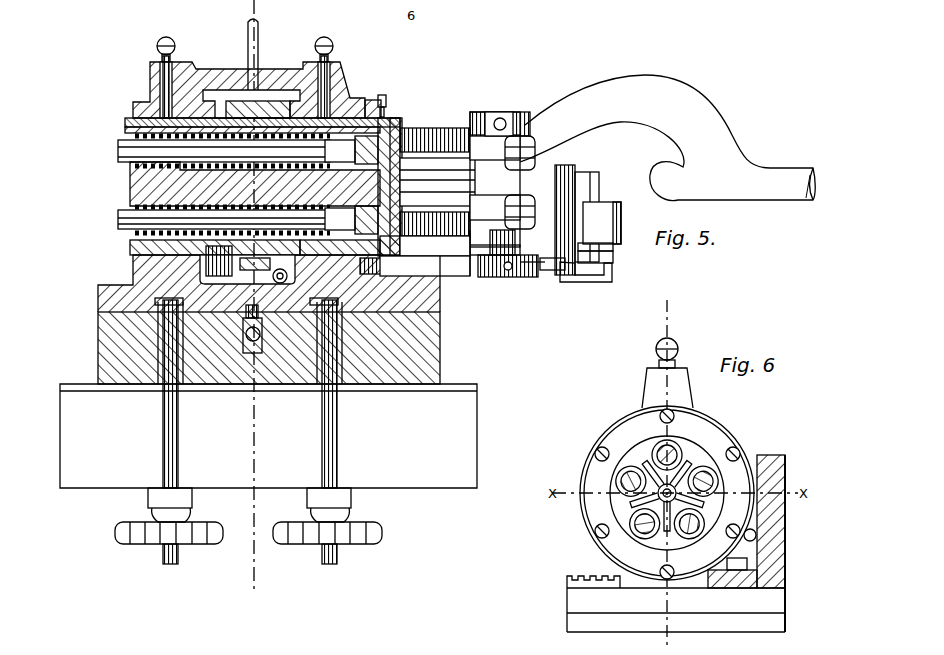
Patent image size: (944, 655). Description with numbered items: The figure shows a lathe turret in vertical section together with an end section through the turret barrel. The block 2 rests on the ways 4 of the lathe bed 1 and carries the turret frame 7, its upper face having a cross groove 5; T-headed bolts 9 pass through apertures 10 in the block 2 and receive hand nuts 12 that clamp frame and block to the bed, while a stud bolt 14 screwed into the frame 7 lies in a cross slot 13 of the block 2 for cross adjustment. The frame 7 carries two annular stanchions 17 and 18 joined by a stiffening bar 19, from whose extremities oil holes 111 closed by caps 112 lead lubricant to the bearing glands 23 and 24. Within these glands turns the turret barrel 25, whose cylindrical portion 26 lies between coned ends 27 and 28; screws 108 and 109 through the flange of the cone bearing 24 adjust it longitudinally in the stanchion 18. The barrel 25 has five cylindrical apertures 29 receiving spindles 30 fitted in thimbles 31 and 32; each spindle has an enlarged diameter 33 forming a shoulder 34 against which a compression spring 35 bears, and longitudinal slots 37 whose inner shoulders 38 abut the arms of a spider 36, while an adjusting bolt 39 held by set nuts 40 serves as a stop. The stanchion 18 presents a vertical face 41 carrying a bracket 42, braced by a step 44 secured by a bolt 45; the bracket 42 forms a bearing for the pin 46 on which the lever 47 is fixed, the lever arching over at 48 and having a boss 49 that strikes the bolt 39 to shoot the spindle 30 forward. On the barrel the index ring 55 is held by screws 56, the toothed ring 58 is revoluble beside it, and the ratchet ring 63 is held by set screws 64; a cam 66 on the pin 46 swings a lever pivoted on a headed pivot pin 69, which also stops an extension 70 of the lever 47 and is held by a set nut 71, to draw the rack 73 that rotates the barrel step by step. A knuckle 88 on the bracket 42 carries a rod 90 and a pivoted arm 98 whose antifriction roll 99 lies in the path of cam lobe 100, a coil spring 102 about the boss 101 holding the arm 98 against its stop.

In FIG. 5, the lathe bed 1 is at (268, 436).
In FIG. 5, the block 2 is at (440, 344).
In FIG. 6, the block 2 is at (567, 626).
In FIG. 5, the ways of the lathe bed 4 is at (470, 382).
In FIG. 6, the cross groove 5 is at (674, 472).
In FIG. 5, the turret frame 7 is at (98, 292).
In FIG. 6, the turret frame 7 is at (567, 598).
In FIG. 5, the T-headed bolts 9 is at (178, 424).
In FIG. 5, the apertures 10 is at (160, 370).
In FIG. 5, the hand nuts 12 is at (115, 530).
In FIG. 5, the cross slot 13 is at (258, 353).
In FIG. 5, the stud bolt 14 is at (234, 396).
In FIG. 5, the annular stanchion 17 is at (133, 105).
In FIG. 6, the annular stanchion 17 is at (667, 384).
In FIG. 5, the annular stanchion 18 is at (366, 100).
In FIG. 6, the annular stanchion 18 is at (728, 432).
In FIG. 5, the stiffening bar 19 is at (276, 68).
In FIG. 5, the bearing gland 23 is at (125, 122).
In FIG. 5, the bearing gland 24 is at (392, 140).
In FIG. 6, the bearing gland 24 is at (668, 436).
In FIG. 5, the turret barrel 25 is at (130, 183).
In FIG. 6, the turret barrel 25 is at (687, 525).
In FIG. 5, the cylindrical portion 26 is at (217, 90).
In FIG. 5, the coned end 27 is at (125, 131).
In FIG. 5, the coned end 28 is at (410, 125).
In FIG. 5, the cylindrical apertures 29 is at (132, 198).
In FIG. 5, the spindles 30 is at (118, 150).
In FIG. 5, the thimble 31 is at (130, 166).
In FIG. 5, the thimble 32 is at (397, 244).
In FIG. 6, the thimble 32 is at (652, 452).
In FIG. 5, the enlarged diameter 33 is at (340, 185).
In FIG. 5, the shoulder 34 is at (221, 183).
In FIG. 5, the compression spring 35 is at (130, 250).
In FIG. 5, the spider 36 is at (400, 180).
In FIG. 6, the spider 36 is at (655, 532).
In FIG. 5, the longitudinal slots 37 is at (338, 197).
In FIG. 6, the longitudinal slots 37 is at (690, 470).
In FIG. 5, the inner shoulders 38 is at (420, 160).
In FIG. 5, the adjusting bolt 39 is at (488, 140).
In FIG. 5, the set nuts 40 is at (494, 183).
In FIG. 6, the vertical face 41 is at (760, 548).
In FIG. 5, the bracket 42 is at (575, 168).
In FIG. 6, the bracket 42 is at (786, 528).
In FIG. 5, the step 44 is at (425, 253).
In FIG. 6, the step 44 is at (715, 588).
In FIG. 5, the bolt 45 is at (430, 250).
In FIG. 6, the bolt 45 is at (740, 570).
In FIG. 5, the pin 46 is at (505, 114).
In FIG. 5, the lever 47 is at (667, 138).
In FIG. 5, the arch 48 is at (650, 126).
In FIG. 5, the boss 49 is at (670, 185).
In FIG. 5, the index ring 55 is at (262, 105).
In FIG. 5, the screws 56 is at (226, 68).
In FIG. 5, the ring 58 is at (260, 68).
In FIG. 5, the ratchet ring 63 is at (286, 68).
In FIG. 5, the set screws 64 is at (295, 70).
In FIG. 5, the cam 66 is at (505, 277).
In FIG. 5, the headed pivot pin 69 is at (455, 115).
In FIG. 5, the extension 70 is at (470, 115).
In FIG. 5, the set nut 71 is at (448, 278).
In FIG. 6, the rack 73 is at (567, 580).
In FIG. 5, the knuckle 88 is at (621, 216).
In FIG. 5, the rod 90 is at (585, 200).
In FIG. 6, the rod 90 is at (786, 515).
In FIG. 5, the arm 98 is at (612, 278).
In FIG. 5, the antifriction roll 99 is at (535, 278).
In FIG. 5, the cam lobe 100 is at (528, 280).
In FIG. 5, the boss 101 is at (613, 246).
In FIG. 5, the coil spring 102 is at (613, 257).
In FIG. 5, the screws 108 is at (390, 268).
In FIG. 6, the screws 108 is at (595, 454).
In FIG. 5, the screws 109 is at (386, 96).
In FIG. 6, the screws 109 is at (660, 414).
In FIG. 5, the oil holes 111 is at (162, 80).
In FIG. 5, the caps 112 is at (158, 40).
In FIG. 6, the caps 112 is at (667, 349).